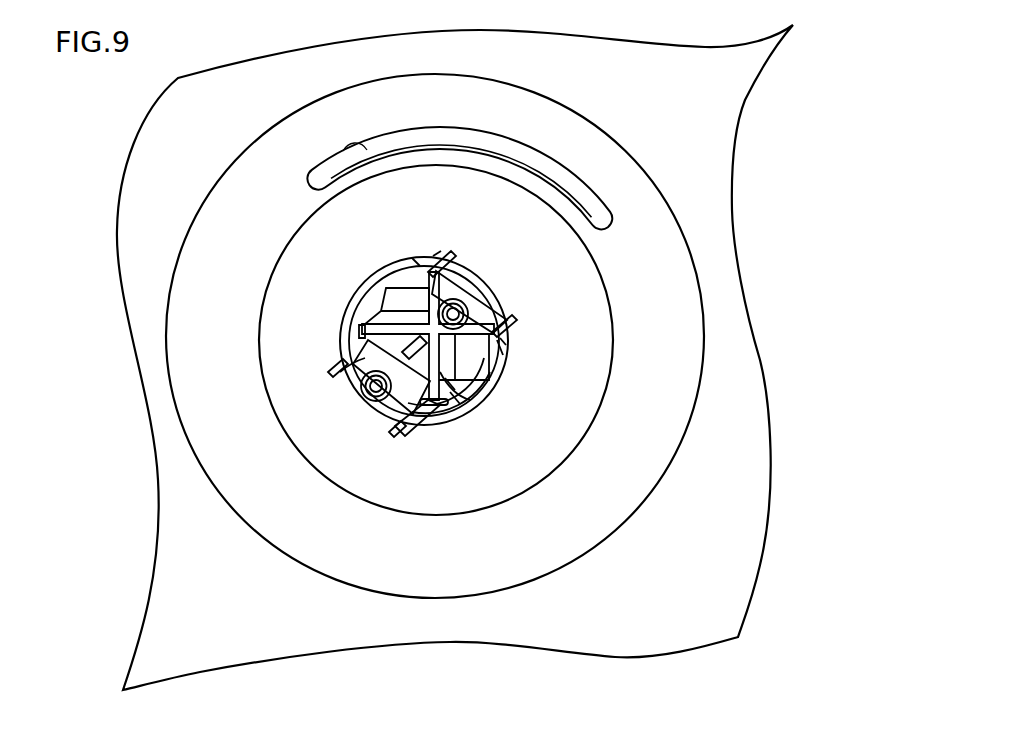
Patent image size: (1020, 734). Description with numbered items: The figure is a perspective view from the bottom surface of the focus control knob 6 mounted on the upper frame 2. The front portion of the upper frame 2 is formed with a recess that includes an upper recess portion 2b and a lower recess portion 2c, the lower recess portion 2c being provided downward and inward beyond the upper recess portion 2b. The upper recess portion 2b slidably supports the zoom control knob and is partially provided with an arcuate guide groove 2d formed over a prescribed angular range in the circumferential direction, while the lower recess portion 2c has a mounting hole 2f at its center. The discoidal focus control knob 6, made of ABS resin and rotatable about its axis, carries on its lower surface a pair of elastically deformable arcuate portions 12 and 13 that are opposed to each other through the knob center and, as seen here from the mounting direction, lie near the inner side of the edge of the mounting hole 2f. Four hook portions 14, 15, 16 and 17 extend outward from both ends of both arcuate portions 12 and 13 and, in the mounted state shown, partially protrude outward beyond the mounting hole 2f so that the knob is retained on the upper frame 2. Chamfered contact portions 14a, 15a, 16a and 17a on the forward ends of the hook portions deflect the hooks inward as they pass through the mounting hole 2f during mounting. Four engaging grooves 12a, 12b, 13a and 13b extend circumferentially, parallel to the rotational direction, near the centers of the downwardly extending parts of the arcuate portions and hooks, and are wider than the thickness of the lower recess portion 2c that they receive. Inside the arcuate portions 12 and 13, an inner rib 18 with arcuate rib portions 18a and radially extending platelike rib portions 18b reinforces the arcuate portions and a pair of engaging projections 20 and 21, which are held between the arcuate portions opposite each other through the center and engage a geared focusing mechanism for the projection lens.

The upper frame 2 is at (345, 55).
The upper recess portion 2b is at (247, 185).
The lower recess portion 2c is at (300, 242).
The arcuate guide groove 2d is at (343, 151).
The mounting hole 2f is at (392, 276).
The focus control knob 6 is at (497, 267).
The arcuate portion 12 is at (398, 263).
The engaging groove 12a is at (437, 253).
The engaging groove 12b is at (362, 328).
The arcuate portion 13 is at (497, 370).
The engaging groove 13a is at (503, 347).
The engaging groove 13b is at (440, 420).
The hook portion 14 is at (453, 257).
The contact portion 14a is at (415, 258).
The hook portion 15 is at (335, 380).
The contact portion 15a is at (333, 363).
The hook portion 16 is at (513, 318).
The contact portion 16a is at (507, 338).
The hook portion 17 is at (392, 422).
The contact portion 17a is at (402, 430).
The inner rib 18 is at (532, 427).
The arcuate rib portion 18a is at (447, 385).
The platelike rib portion 18b is at (453, 397).
The engaging projection 20 is at (493, 285).
The engaging projection 21 is at (375, 402).